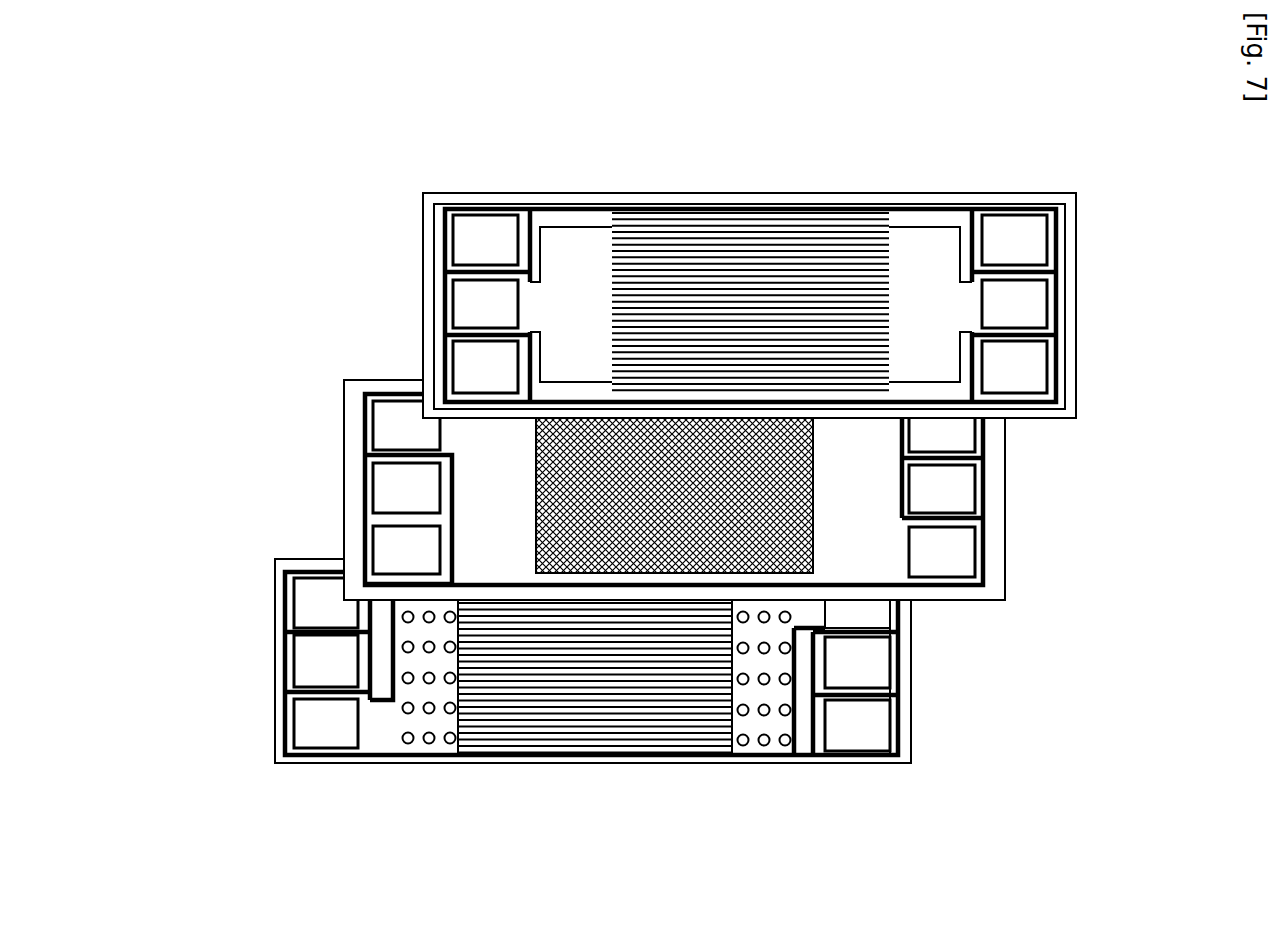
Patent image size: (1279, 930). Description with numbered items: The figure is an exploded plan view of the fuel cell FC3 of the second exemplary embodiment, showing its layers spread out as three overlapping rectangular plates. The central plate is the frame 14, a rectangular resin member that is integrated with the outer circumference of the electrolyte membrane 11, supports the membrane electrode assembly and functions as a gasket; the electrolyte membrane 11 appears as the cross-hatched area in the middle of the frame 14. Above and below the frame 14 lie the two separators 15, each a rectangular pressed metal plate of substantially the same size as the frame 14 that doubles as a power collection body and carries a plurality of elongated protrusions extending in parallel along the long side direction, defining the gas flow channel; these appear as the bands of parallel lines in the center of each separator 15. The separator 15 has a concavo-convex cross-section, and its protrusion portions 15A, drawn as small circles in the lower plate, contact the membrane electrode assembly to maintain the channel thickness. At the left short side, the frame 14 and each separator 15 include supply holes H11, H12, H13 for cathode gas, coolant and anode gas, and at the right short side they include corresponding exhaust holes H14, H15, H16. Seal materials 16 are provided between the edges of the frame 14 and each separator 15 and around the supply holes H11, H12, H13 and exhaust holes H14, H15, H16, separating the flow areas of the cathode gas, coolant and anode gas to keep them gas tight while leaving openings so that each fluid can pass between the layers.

The fuel cell FC3 is at (675, 451).
The electrolyte membrane 11 is at (661, 582).
The frame 14 is at (837, 437).
The separator 15 is at (634, 178).
The protrusion portions 15A is at (449, 712).
The seal material 16 is at (537, 205).
The supply hole H11 is at (463, 227).
The supply hole H12 is at (463, 293).
The supply hole H13 is at (463, 357).
The exhaust hole H14 is at (1038, 242).
The exhaust hole H15 is at (1038, 306).
The exhaust hole H16 is at (1038, 378).